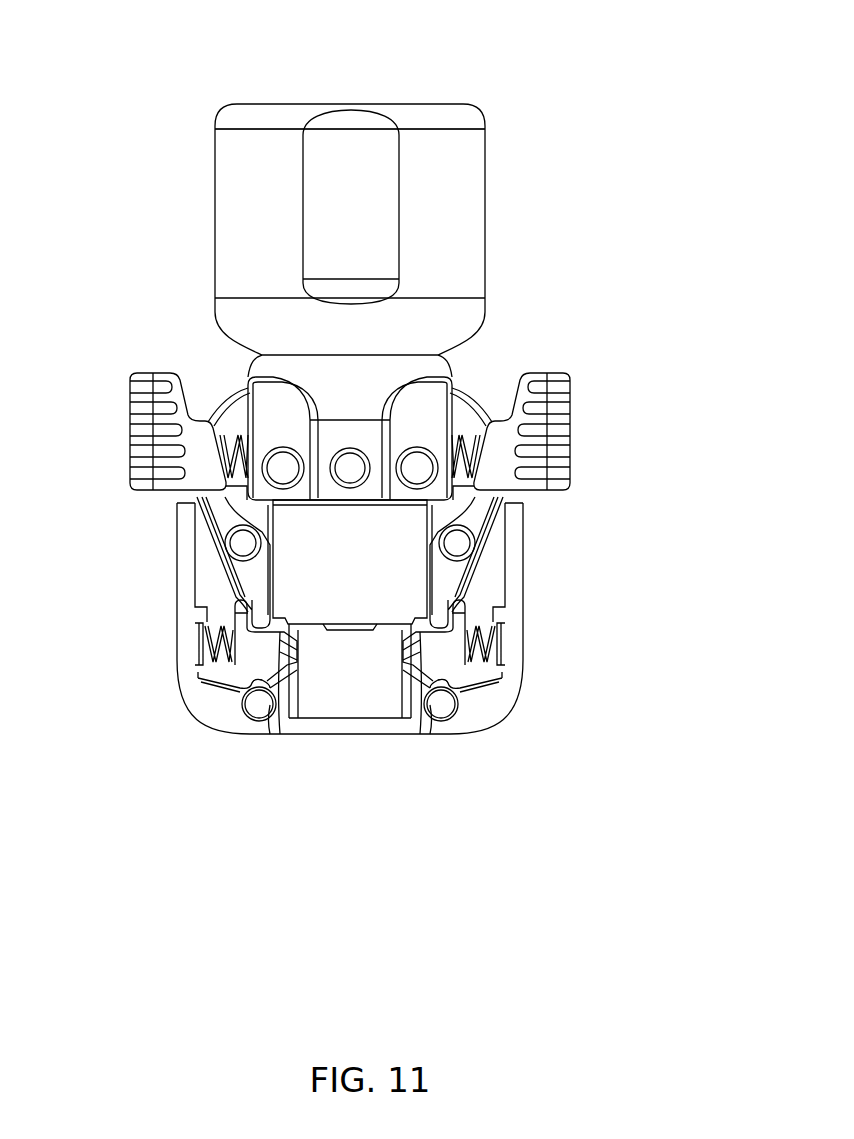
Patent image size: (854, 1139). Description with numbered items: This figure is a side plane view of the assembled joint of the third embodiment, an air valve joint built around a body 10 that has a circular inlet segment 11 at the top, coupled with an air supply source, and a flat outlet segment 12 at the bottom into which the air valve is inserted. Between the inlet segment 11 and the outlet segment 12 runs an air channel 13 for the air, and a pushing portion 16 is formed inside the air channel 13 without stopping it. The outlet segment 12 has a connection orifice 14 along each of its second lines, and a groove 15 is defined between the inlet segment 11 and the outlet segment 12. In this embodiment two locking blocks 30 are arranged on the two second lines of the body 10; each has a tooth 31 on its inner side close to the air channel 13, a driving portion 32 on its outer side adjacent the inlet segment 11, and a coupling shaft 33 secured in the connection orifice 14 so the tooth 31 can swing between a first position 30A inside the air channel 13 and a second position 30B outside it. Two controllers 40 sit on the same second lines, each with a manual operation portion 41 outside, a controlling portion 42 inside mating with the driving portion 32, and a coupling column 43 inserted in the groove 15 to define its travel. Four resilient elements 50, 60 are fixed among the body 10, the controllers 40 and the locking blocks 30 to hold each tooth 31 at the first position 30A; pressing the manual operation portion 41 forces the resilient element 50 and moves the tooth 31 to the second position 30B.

The body 10 is at (487, 214).
The inlet segment 11 is at (331, 104).
The outlet segment 12 is at (362, 735).
The air channel 13 is at (353, 690).
The connection orifice 14 is at (252, 722).
The groove 15 is at (220, 538).
The pushing portion 16 is at (345, 630).
The locking block 30 is at (230, 676).
The first position 30A is at (300, 700).
The second position 30B is at (258, 700).
The tooth 31 is at (305, 624).
The driving portion 32 is at (240, 613).
The coupling shaft 33 is at (252, 705).
The controller 40 is at (122, 440).
The manual operation portion 41 is at (135, 380).
The controlling portion 42 is at (242, 587).
The coupling column 43 is at (245, 533).
The resilient element 50 is at (206, 640).
The resilient element 60 is at (232, 430).